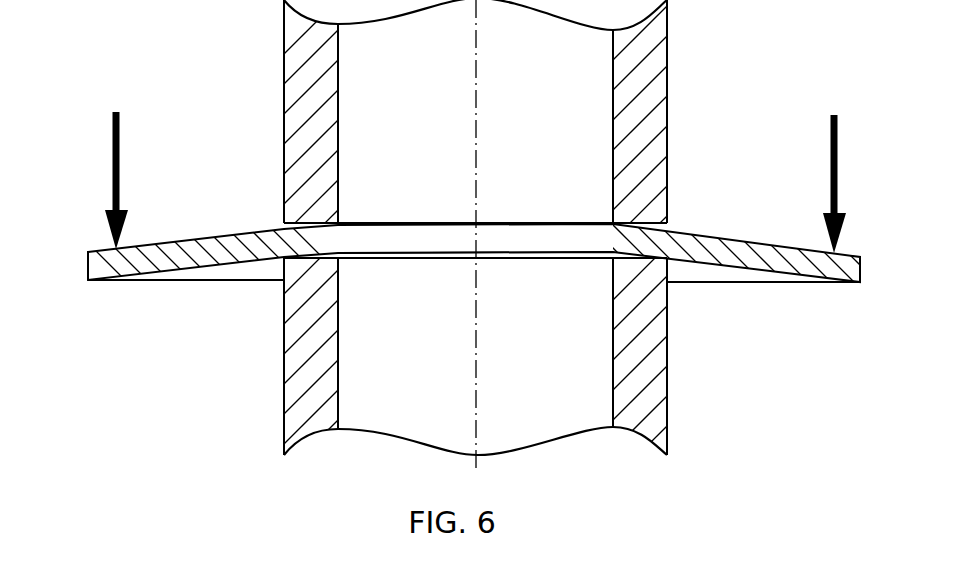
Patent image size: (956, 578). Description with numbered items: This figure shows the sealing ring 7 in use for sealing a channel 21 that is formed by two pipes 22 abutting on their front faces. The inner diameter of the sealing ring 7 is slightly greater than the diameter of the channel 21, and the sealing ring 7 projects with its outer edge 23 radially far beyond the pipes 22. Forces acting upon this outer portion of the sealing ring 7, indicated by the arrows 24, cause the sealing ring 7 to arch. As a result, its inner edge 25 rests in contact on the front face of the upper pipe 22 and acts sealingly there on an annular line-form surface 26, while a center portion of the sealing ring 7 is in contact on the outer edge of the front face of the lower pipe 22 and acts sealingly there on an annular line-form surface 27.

The sealing ring 7 is at (402, 235).
The channel 21 is at (368, 332).
The pipes 22 is at (310, 62).
The outer edge 23 is at (87, 268).
The arrows 24 is at (120, 132).
The inner edge 25 is at (595, 253).
The annular line-form surface 26 is at (612, 223).
The annular line-form surface 27 is at (277, 268).